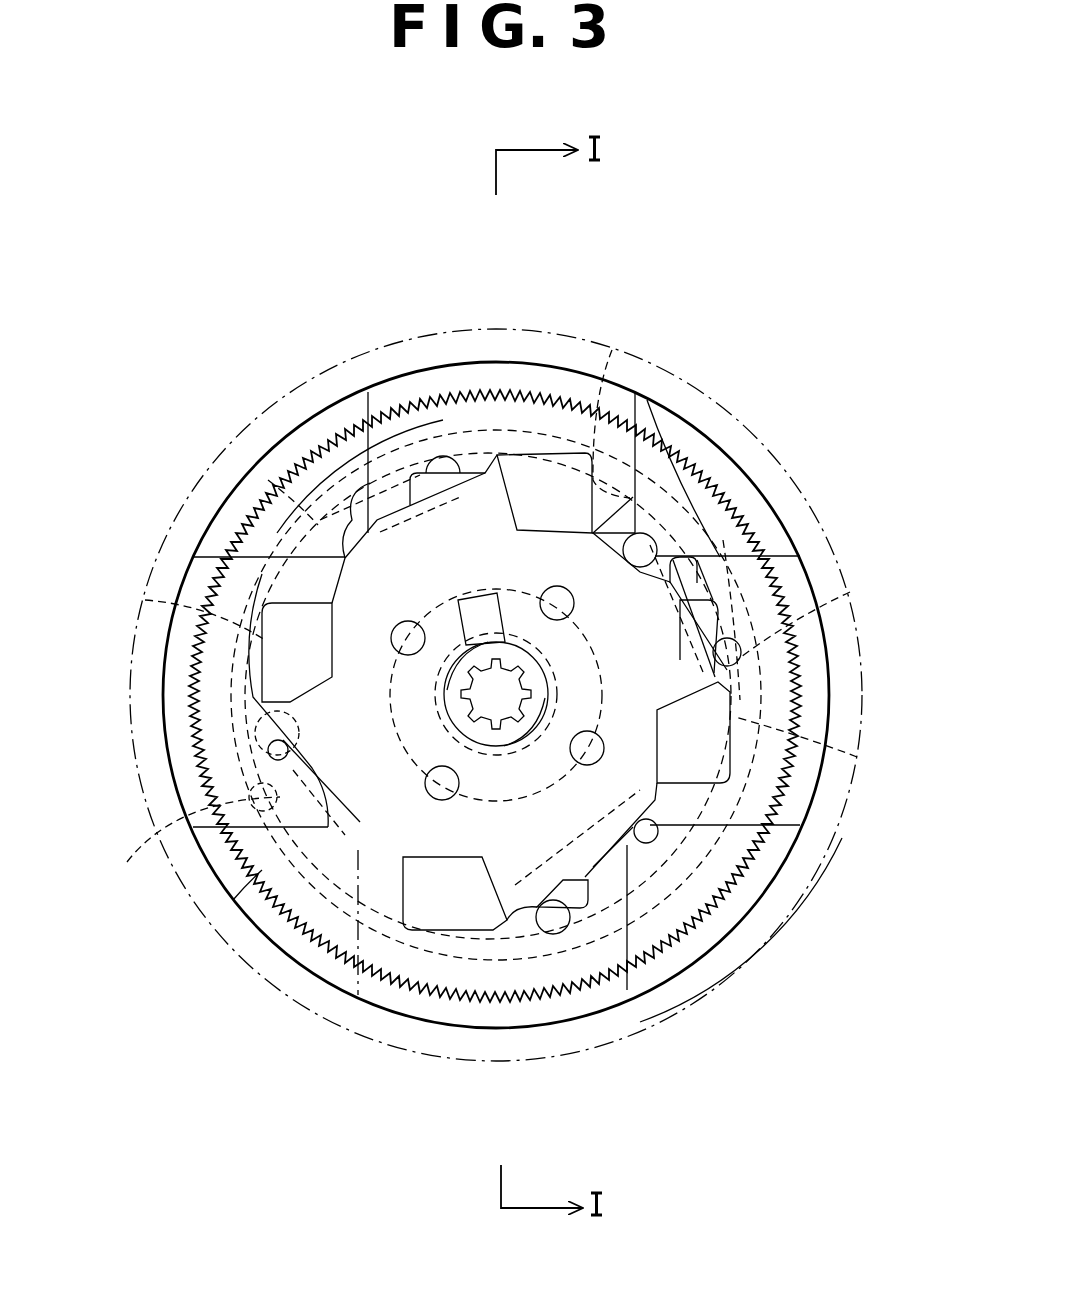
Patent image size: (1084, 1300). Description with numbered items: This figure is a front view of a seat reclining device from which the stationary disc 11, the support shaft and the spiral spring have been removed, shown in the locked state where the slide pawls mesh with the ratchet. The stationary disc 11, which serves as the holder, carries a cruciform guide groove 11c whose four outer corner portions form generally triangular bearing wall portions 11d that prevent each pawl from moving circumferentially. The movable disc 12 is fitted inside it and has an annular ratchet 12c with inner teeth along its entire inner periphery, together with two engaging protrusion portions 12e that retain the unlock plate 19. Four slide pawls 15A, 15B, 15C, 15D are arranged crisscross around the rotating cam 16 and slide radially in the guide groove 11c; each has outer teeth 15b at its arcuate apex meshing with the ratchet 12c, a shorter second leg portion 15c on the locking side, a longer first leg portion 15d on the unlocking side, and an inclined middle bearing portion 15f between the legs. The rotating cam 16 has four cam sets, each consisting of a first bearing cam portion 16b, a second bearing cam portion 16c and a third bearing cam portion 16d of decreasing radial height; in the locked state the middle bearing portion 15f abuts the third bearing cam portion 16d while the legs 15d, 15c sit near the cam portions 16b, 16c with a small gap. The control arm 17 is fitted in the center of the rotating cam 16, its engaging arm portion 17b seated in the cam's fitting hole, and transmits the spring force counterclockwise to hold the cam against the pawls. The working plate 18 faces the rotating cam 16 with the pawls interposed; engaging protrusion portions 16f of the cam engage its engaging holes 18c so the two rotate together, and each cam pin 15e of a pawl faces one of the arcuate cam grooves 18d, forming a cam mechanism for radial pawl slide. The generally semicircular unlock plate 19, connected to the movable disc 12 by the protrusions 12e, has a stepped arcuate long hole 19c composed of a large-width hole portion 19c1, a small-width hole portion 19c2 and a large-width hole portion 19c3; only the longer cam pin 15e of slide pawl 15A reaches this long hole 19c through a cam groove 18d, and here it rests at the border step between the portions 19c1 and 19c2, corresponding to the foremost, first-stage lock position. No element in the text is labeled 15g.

The stationary disc 11 is at (277, 992).
The guide groove 11c is at (363, 1000).
The bearing wall portion 11d is at (742, 947).
The movable disc 12 is at (650, 992).
The ratchet 12c is at (262, 878).
The engaging protrusion portion 12e is at (857, 757).
The slide pawl 15A is at (478, 390).
The slide pawl 15B is at (247, 559).
The slide pawl 15C is at (483, 1002).
The slide pawl 15D is at (743, 824).
The outer teeth 15b is at (548, 395).
The second leg portion 15c is at (390, 553).
The first leg portion 15d is at (666, 458).
The cam pin 15e is at (444, 456).
The middle bearing portion 15f is at (473, 490).
The ring gear arm 15g is at (387, 520).
The rotating cam 16 is at (645, 708).
The first bearing cam portion 16b is at (668, 458).
The second bearing cam portion 16c is at (330, 535).
The third bearing cam portion 16d is at (443, 520).
The engaging protrusion portion 16f is at (316, 740).
The control arm 17 is at (505, 752).
The engaging arm portion 17b is at (500, 578).
The working plate 18 is at (690, 505).
The engaging hole 18c is at (290, 750).
The cam groove 18d is at (404, 620).
The unlock plate 19 is at (460, 832).
The long hole 19c is at (268, 480).
The large-width hole portion 19c1 is at (185, 592).
The small-width hole portion 19c2 is at (612, 350).
The large-width hole portion 19c3 is at (848, 592).